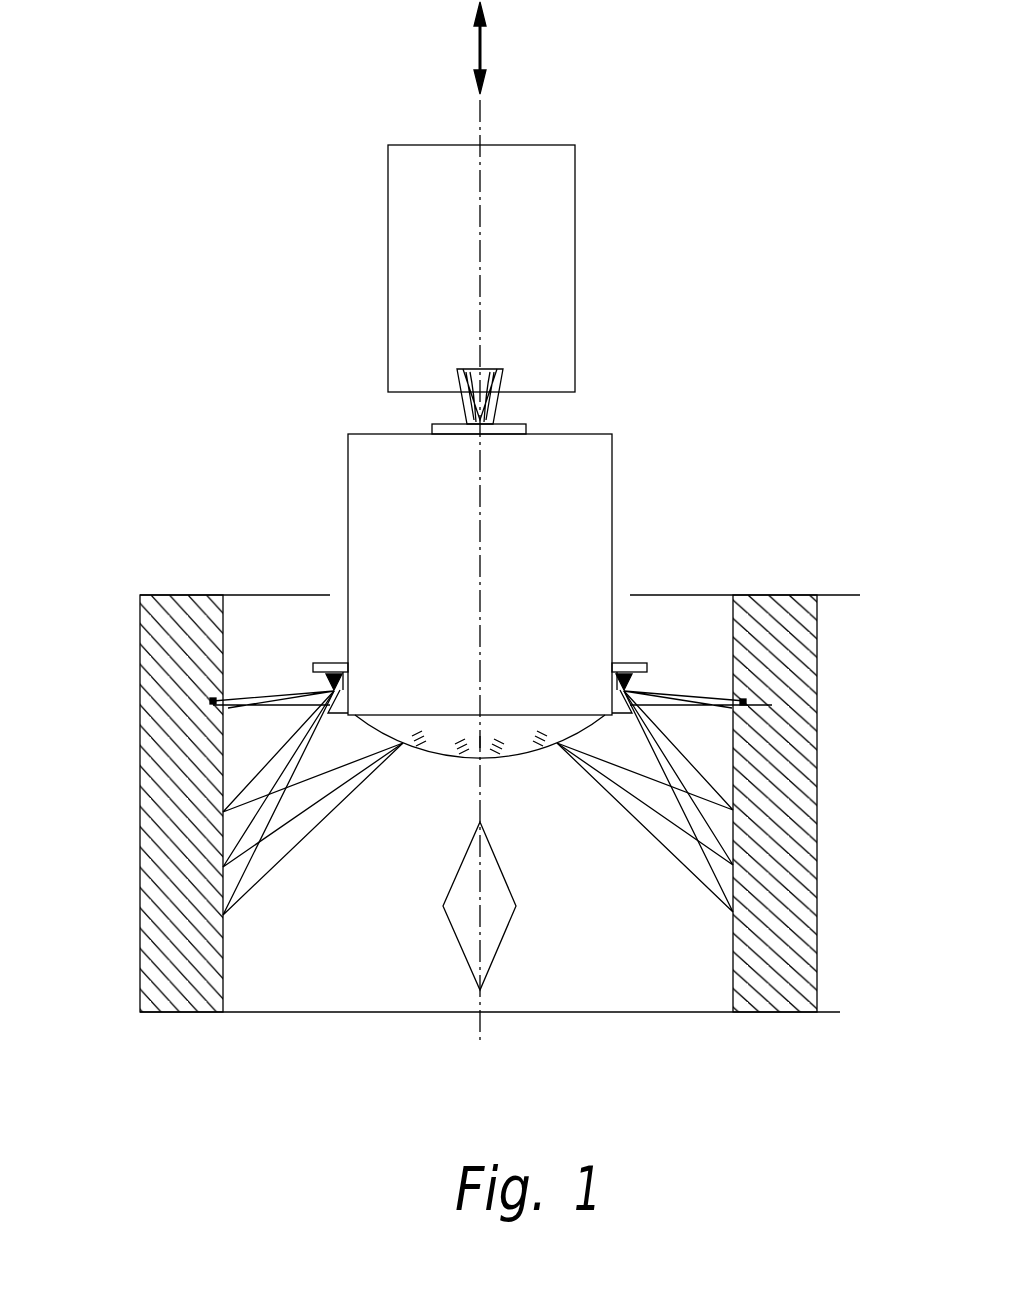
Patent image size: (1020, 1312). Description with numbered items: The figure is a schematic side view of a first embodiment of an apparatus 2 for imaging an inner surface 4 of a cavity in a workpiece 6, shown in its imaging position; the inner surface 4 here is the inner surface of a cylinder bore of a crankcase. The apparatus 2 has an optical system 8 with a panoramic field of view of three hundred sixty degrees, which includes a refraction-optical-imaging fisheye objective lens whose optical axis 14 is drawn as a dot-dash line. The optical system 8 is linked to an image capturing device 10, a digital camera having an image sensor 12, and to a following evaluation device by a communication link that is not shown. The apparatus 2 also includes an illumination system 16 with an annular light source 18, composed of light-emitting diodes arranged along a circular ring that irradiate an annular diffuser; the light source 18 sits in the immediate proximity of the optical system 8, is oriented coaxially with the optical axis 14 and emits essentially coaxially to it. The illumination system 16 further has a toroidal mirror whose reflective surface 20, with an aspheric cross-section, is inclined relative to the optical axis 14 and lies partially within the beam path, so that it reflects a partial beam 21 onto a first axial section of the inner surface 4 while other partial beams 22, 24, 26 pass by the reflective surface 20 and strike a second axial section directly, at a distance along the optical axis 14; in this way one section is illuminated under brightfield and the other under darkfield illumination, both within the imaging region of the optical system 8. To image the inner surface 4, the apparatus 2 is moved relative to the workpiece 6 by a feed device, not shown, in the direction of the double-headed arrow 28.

The apparatus 2 is at (602, 90).
The inner surface 4 is at (733, 617).
The workpiece 6 is at (786, 596).
The optical system 8 is at (410, 525).
The image capturing device 10 is at (410, 207).
The image sensor 12 is at (455, 362).
The optical axis 14 is at (490, 126).
The illumination system 16 is at (318, 636).
The annular light source 18 is at (320, 663).
The reflective surface 20 is at (330, 690).
The partial beam 21 is at (212, 703).
The partial beam 22 is at (223, 812).
The partial beam 24 is at (223, 867).
The partial beam 26 is at (223, 915).
The double-headed arrow 28 is at (478, 48).